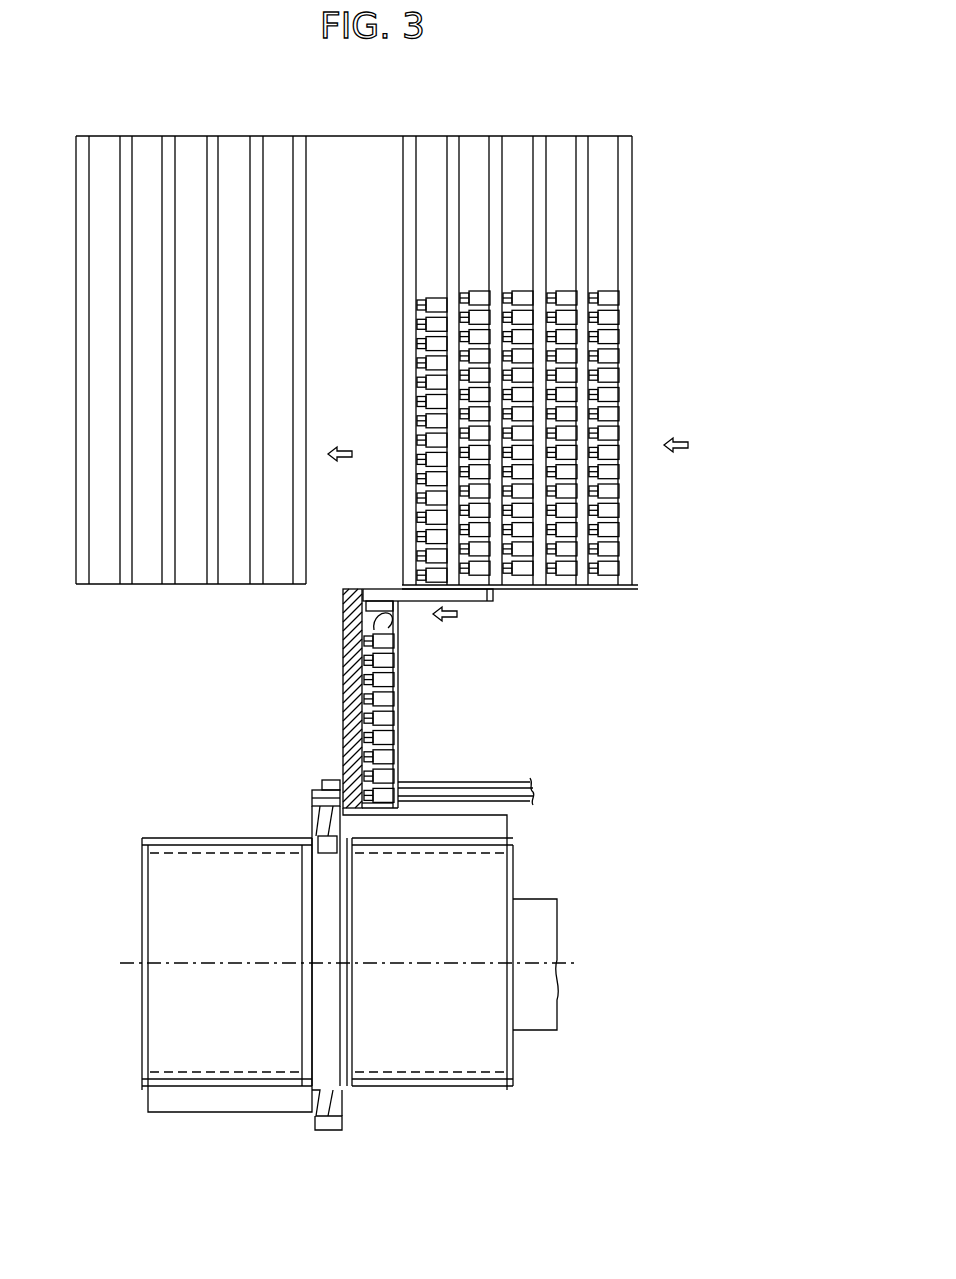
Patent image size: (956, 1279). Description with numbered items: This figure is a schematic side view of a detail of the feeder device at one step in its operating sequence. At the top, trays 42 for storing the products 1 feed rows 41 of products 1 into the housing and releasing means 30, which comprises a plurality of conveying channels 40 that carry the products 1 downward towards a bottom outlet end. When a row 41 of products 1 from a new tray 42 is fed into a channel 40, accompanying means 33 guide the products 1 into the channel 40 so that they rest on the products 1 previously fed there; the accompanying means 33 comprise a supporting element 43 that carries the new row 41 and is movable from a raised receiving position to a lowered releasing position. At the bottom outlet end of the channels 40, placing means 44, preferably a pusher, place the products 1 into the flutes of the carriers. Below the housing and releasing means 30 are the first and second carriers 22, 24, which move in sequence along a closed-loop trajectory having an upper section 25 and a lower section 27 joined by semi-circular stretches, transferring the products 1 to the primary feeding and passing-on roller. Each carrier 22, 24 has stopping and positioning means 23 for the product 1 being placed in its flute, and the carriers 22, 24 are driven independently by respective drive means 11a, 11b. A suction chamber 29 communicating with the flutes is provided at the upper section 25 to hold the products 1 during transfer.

The product 1 is at (568, 405).
The drive means 11a is at (445, 1040).
The drive means 11b is at (317, 912).
The first carrier 22 is at (490, 830).
The stopping and positioning means 23 is at (308, 797).
The second carrier 24 is at (242, 1104).
The upper section 25 is at (174, 834).
The lower section 27 is at (270, 1132).
The suction chamber 29 is at (328, 1040).
The housing and releasing means 30 is at (336, 688).
The accompanying means 33 is at (528, 611).
The conveying channel 40 is at (388, 618).
The row of products 41 is at (381, 594).
The tray 42 is at (642, 358).
The supporting element 43 is at (497, 594).
The placing means 44 is at (511, 778).